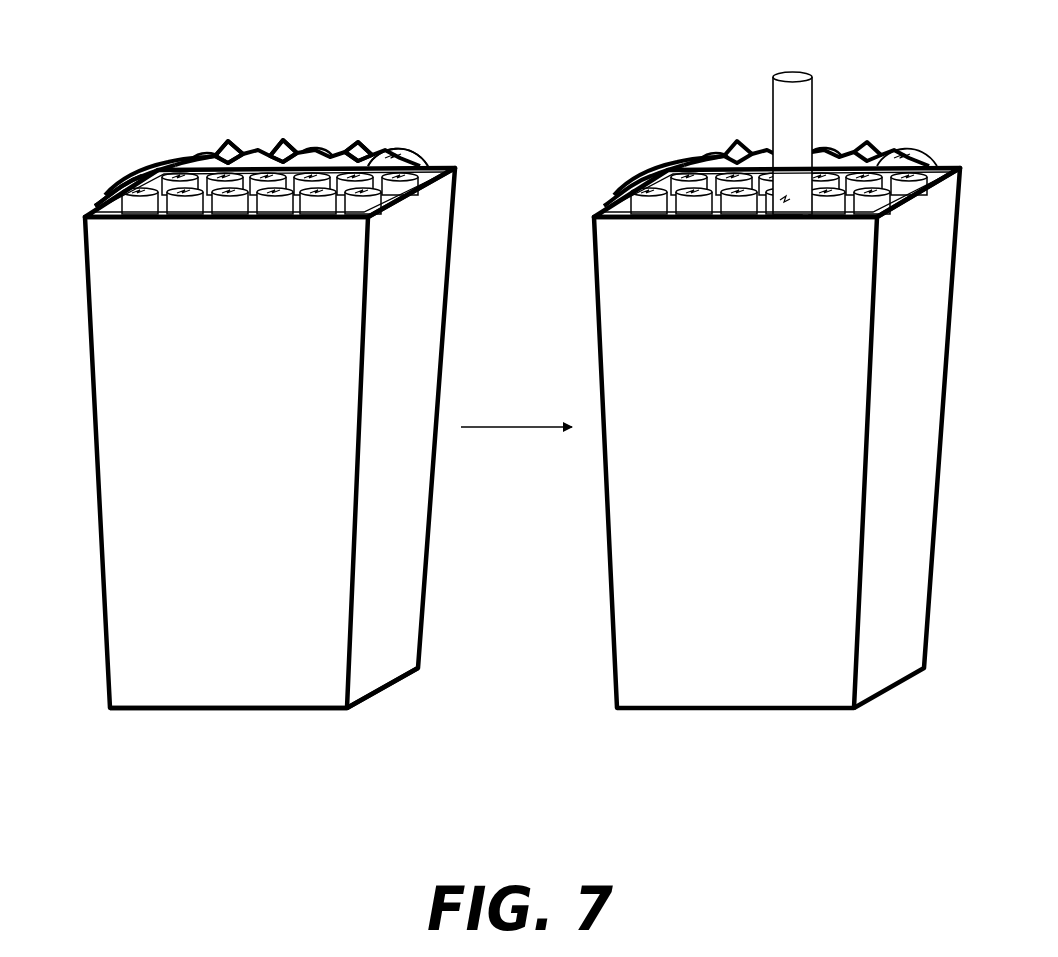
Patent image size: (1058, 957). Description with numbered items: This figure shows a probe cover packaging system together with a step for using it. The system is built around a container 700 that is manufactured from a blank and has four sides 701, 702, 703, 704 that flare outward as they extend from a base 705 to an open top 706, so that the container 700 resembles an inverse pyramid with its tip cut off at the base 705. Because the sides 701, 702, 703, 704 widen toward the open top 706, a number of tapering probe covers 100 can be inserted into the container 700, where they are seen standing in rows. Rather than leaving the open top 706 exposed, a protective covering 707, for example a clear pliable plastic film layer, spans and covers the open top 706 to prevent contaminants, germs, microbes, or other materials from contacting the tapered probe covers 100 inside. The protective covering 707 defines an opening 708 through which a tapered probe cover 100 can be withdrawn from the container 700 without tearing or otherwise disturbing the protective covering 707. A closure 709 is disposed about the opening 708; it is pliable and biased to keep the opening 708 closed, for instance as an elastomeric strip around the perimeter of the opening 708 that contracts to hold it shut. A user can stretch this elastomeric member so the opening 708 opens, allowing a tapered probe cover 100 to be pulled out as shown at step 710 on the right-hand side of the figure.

The tapered probe cover 100 is at (772, 115).
The container 700 is at (284, 371).
The side 701 is at (182, 506).
The side 702 is at (398, 525).
The side 703 is at (397, 163).
The side 704 is at (103, 200).
The base 705 is at (374, 693).
The open top 706 is at (150, 170).
The protective covering 707 is at (380, 147).
The opening 708 is at (282, 143).
The closure 709 is at (232, 143).
The step 710 is at (777, 405).